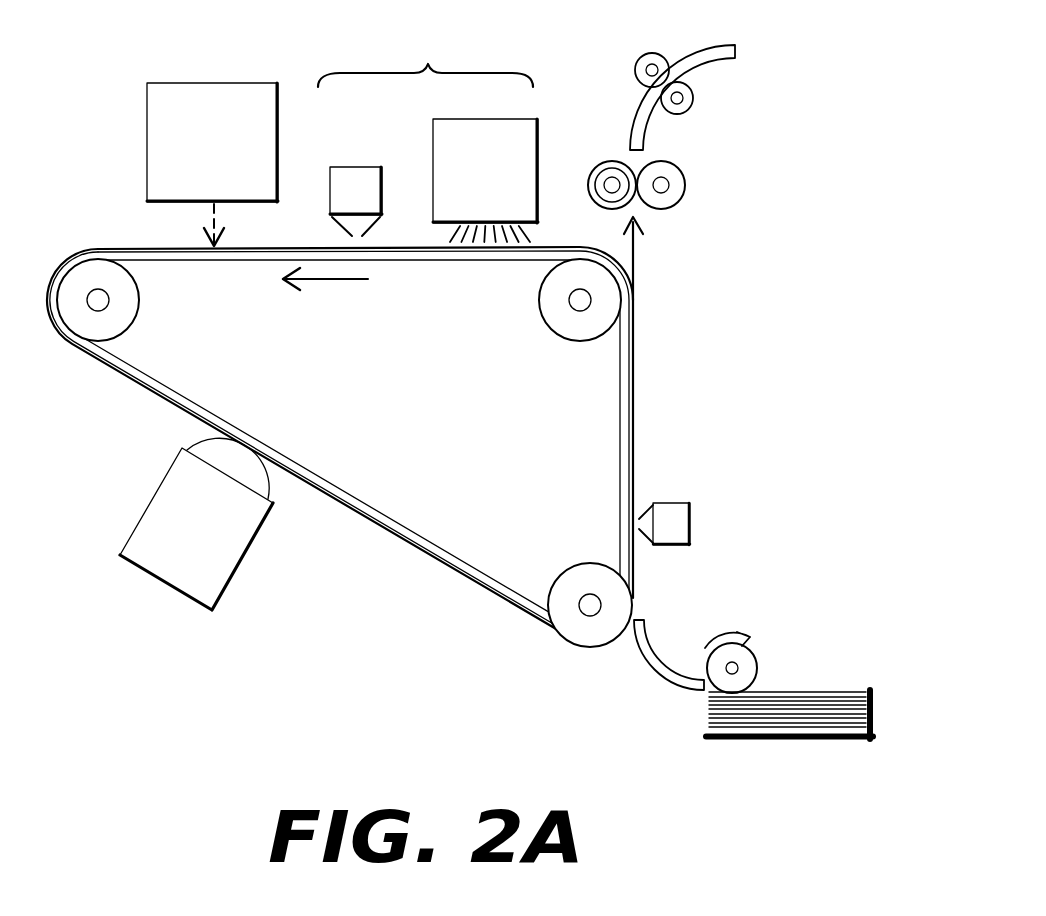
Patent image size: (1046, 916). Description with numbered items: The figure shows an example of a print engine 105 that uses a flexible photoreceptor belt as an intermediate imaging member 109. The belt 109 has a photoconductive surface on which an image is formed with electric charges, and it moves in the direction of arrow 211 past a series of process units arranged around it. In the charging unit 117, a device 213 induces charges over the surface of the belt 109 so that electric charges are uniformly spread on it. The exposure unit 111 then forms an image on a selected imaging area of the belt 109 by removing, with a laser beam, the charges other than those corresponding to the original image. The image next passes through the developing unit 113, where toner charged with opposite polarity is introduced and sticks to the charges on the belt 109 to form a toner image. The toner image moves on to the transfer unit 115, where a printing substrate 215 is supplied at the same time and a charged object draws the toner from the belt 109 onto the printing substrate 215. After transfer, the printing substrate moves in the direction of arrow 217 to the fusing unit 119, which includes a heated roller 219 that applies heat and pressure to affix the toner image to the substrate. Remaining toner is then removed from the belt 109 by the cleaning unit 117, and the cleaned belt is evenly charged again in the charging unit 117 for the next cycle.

The print engine 105 is at (829, 89).
The flexible photoreceptor belt 109 is at (410, 548).
The exposure unit 111 is at (188, 83).
The developing unit 113 is at (148, 509).
The transfer unit 115 is at (690, 527).
The charging unit 117 is at (428, 137).
The fusing unit 119 is at (678, 160).
The arrow 211 is at (338, 280).
The device 213 is at (356, 167).
The printing substrate 215 is at (812, 693).
The arrow 217 is at (635, 258).
The heated roller 219 is at (600, 163).